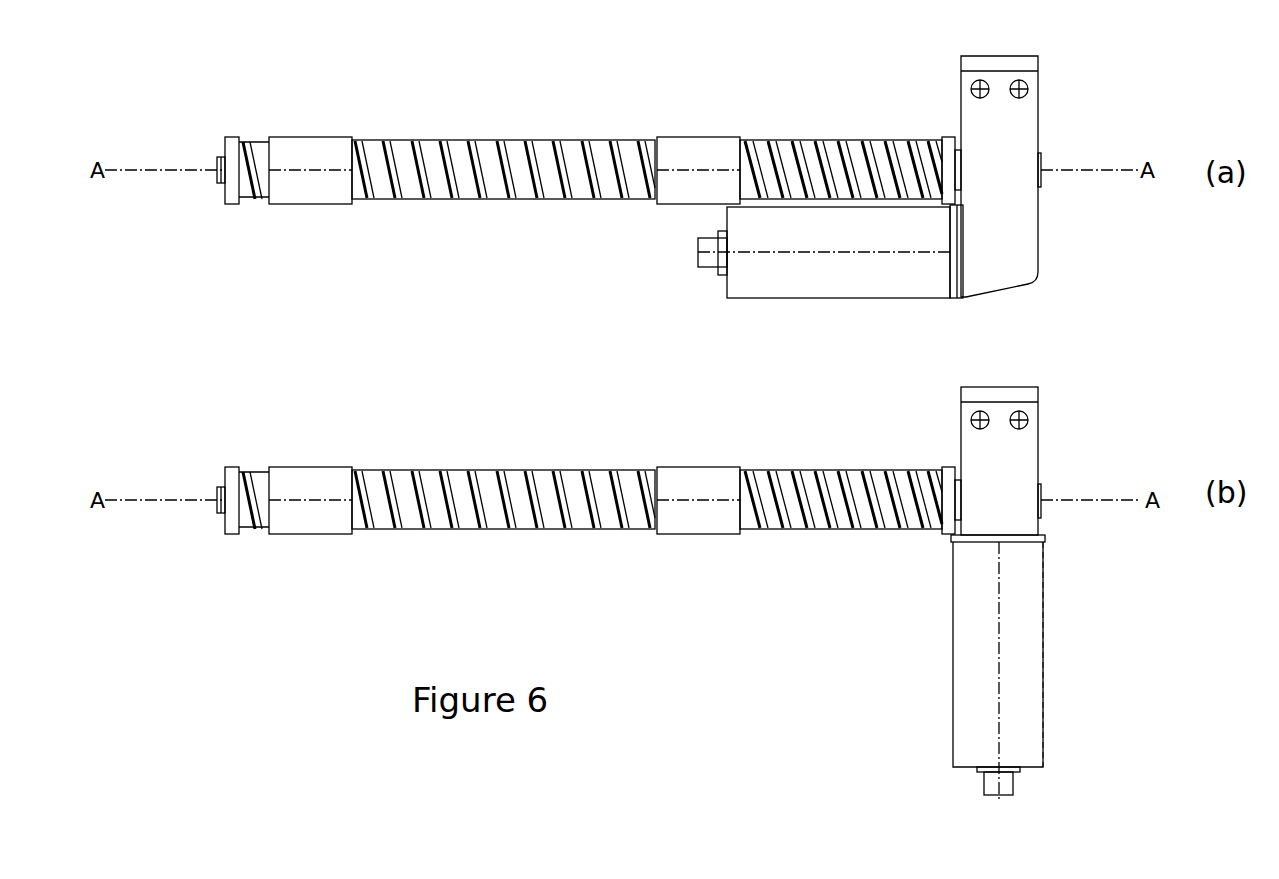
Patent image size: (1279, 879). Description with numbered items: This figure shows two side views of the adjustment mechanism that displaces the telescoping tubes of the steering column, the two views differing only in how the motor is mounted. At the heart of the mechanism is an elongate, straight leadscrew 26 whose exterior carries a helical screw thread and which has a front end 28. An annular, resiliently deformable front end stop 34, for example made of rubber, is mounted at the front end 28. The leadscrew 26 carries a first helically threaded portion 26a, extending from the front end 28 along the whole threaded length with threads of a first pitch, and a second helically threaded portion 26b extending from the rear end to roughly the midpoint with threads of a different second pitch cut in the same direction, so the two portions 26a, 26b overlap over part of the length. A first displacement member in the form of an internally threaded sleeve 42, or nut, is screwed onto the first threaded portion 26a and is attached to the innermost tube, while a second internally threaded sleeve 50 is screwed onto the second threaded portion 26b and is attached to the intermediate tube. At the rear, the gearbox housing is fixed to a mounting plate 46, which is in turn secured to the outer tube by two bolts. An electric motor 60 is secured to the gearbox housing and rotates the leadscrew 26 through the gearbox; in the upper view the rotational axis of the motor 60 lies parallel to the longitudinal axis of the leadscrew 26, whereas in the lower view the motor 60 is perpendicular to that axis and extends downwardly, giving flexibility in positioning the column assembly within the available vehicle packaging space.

The leadscrew 26 is at (656, 290).
The first helically threaded portion 26a is at (455, 157).
The second helically threaded portion 26b is at (803, 155).
The front end 28 is at (215, 172).
The front end stop 34 is at (232, 150).
The internally threaded sleeve 42 is at (308, 148).
The mounting plate 46 is at (1012, 122).
The internally threaded sleeve 50 is at (695, 155).
The electric motor 60 is at (832, 278).